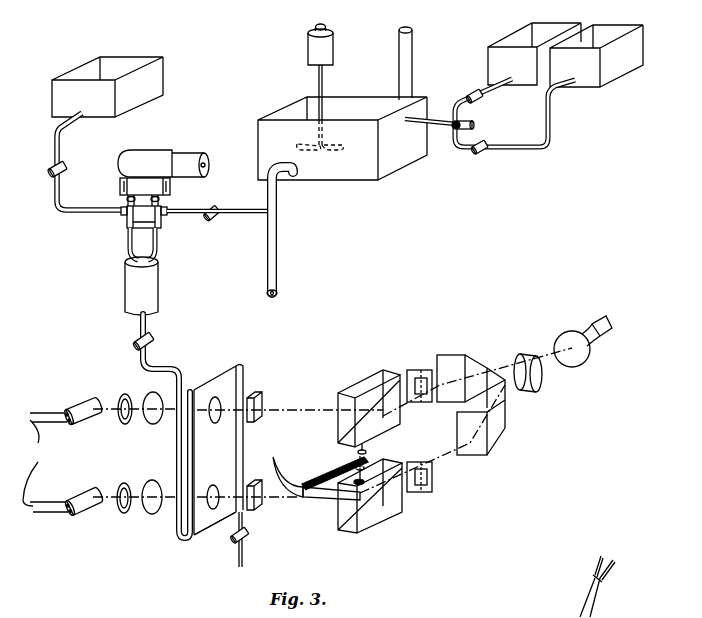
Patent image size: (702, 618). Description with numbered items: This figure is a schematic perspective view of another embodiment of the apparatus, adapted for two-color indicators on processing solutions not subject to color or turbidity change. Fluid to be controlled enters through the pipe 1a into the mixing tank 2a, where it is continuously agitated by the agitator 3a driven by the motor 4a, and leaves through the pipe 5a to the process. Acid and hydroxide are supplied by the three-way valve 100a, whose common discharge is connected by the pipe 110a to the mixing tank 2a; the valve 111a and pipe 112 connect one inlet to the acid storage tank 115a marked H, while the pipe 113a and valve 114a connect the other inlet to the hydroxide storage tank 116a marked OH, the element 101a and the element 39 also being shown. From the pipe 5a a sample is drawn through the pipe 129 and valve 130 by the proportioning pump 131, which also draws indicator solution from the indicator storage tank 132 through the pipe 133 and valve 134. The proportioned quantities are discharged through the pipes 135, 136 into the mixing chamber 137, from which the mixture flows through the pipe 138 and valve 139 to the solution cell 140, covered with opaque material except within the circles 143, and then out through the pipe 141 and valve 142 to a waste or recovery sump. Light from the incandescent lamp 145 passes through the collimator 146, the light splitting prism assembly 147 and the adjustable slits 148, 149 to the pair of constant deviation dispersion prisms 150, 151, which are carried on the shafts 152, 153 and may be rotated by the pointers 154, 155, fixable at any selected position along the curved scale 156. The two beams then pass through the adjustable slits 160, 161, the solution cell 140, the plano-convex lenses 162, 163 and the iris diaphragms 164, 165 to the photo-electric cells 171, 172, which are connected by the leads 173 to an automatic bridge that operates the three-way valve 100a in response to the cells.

The indicator storage tank 132 is at (123, 58).
The pipe 133 is at (53, 142).
The valve 134 is at (50, 173).
The proportioning pump 131 is at (157, 143).
The valve 130 is at (210, 219).
The pipe 129 is at (256, 218).
The pipe 136 is at (125, 240).
The pipe 135 is at (156, 251).
The mixing chamber 137 is at (160, 287).
The pipe 138 is at (140, 322).
The valve 139 is at (153, 348).
The solution cell 140 is at (218, 378).
The circles 143 is at (222, 488).
The pipe 141 is at (234, 528).
The valve 142 is at (236, 543).
The photo-electric cell 171 is at (70, 406).
The photo-electric cell 172 is at (69, 500).
The leads 173 is at (45, 463).
The iris diaphragm 164 is at (121, 396).
The iris diaphragm 165 is at (118, 514).
The plano-convex lens 162 is at (154, 425).
The plano-convex lens 163 is at (149, 480).
The adjustable slit 160 is at (265, 400).
The adjustable slit 161 is at (258, 512).
The constant deviation dispersion prism 150 is at (355, 392).
The constant deviation dispersion prism 151 is at (393, 521).
The adjustable slit 148 is at (415, 368).
The adjustable slit 149 is at (425, 494).
The light splitting prism assembly 147 is at (497, 443).
The collimator 146 is at (540, 392).
The incandescent lamp 145 is at (595, 360).
The shaft 152 is at (367, 453).
The shaft 153 is at (365, 465).
The pointer 154 is at (343, 475).
The pointer 155 is at (330, 482).
The curved scale 156 is at (330, 507).
The cable 39 is at (620, 617).
The mixing tank 2a is at (358, 181).
The motor 4a is at (306, 44).
The agitator 3a is at (300, 140).
The pipe 1a is at (397, 50).
The pipe 5a is at (279, 262).
The hydroxide storage tank 116a is at (488, 47).
The acid storage tank 115a is at (641, 42).
The pipe 113a is at (465, 106).
The pipe 112 is at (551, 136).
The valve 114a is at (470, 92).
The valve 111a is at (484, 152).
The pipe 110a is at (433, 117).
The three-way valve 100a is at (473, 126).
The junction 101a is at (456, 131).